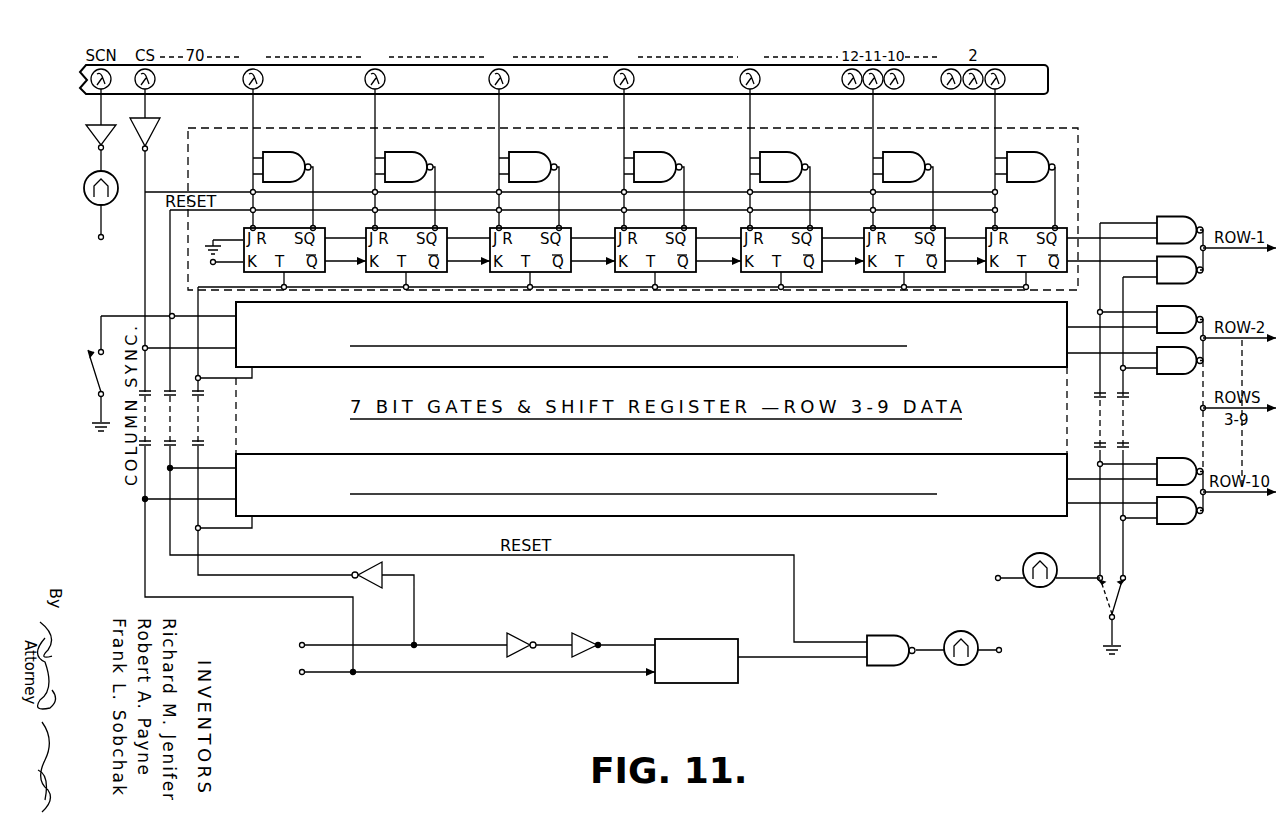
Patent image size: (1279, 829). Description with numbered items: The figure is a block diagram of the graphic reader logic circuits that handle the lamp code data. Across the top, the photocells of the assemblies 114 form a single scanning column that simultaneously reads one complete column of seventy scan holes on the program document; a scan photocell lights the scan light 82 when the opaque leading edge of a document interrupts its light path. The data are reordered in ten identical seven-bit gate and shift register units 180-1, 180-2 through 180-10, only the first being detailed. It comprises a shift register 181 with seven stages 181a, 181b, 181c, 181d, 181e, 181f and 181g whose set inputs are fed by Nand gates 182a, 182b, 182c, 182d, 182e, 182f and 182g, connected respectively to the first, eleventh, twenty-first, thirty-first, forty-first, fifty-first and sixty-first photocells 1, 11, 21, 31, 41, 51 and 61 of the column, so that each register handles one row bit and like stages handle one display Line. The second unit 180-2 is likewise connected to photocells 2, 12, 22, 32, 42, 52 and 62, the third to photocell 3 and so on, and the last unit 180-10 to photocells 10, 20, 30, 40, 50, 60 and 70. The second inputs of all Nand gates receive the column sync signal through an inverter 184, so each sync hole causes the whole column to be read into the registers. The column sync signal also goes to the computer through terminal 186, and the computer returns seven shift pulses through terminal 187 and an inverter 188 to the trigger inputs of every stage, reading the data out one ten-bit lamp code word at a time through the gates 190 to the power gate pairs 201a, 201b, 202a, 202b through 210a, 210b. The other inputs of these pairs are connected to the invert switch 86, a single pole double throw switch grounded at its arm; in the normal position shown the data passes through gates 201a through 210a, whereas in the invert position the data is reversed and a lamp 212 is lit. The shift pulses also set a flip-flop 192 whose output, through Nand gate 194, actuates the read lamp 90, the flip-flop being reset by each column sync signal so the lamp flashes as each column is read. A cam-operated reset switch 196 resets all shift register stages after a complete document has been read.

The photocell assemblies 114 is at (933, 42).
The scan light 82 is at (95, 176).
The inverter 184 is at (152, 122).
The row 1 gate and shift register unit 180-1 is at (244, 160).
The second gate and shift register unit 180-2 is at (340, 368).
The last gate and shift register unit 180-10 is at (338, 454).
The shift register 181 is at (224, 231).
The first stage 181a is at (1058, 220).
The second stage 181b is at (943, 218).
The third stage 181c is at (820, 218).
The fourth stage 181d is at (694, 218).
The fifth stage 181e is at (569, 218).
The sixth stage 181f is at (445, 218).
The seventh stage 181g is at (323, 218).
The Nand gate 182a is at (1010, 153).
The Nand gate 182b is at (925, 154).
The Nand gate 182c is at (800, 154).
The Nand gate 182d is at (674, 154).
The Nand gate 182e is at (549, 154).
The Nand gate 182f is at (425, 154).
The Nand gate 182g is at (303, 154).
The reset switch 196 is at (94, 380).
The gates 190 is at (1167, 214).
The power gate 201a is at (1182, 217).
The power gate 201b is at (1182, 284).
The power gate 202a is at (1188, 306).
The power gate 202b is at (1185, 374).
The power gate 210a is at (1185, 458).
The power gate 210b is at (1180, 524).
The invert switch 86 is at (1125, 581).
The lamp 212 is at (1036, 554).
The read lamp 90 is at (994, 616).
The Nand gate 194 is at (880, 636).
The flip-flop 192 is at (728, 684).
The inverter 188 is at (380, 586).
The terminal 187 is at (300, 646).
The terminal 186 is at (300, 673).
The sixty-first photocell 61 is at (253, 68).
The fifty-first photocell 51 is at (375, 68).
The forty-first photocell 41 is at (499, 68).
The thirty-first photocell 31 is at (624, 68).
The twenty-first photocell 21 is at (750, 68).
The eleventh photocell 11 is at (873, 79).
The third photocell 3 is at (951, 68).
The first photocell 1 is at (995, 68).
The sixty-second photocell 62 is at (299, 291).
The fifty-second photocell 52 is at (422, 291).
The forty-second photocell 42 is at (549, 291).
The thirty-second photocell 32 is at (674, 291).
The twenty-second photocell 22 is at (800, 291).
The twelfth photocell 12 is at (925, 291).
The second photocell 2 is at (1048, 291).
The seventieth photocell 70 is at (299, 443).
The sixtieth photocell 60 is at (422, 443).
The fiftieth photocell 50 is at (549, 443).
The fortieth photocell 40 is at (674, 443).
The thirtieth photocell 30 is at (800, 443).
The twentieth photocell 20 is at (925, 443).
The tenth photocell 10 is at (1048, 443).